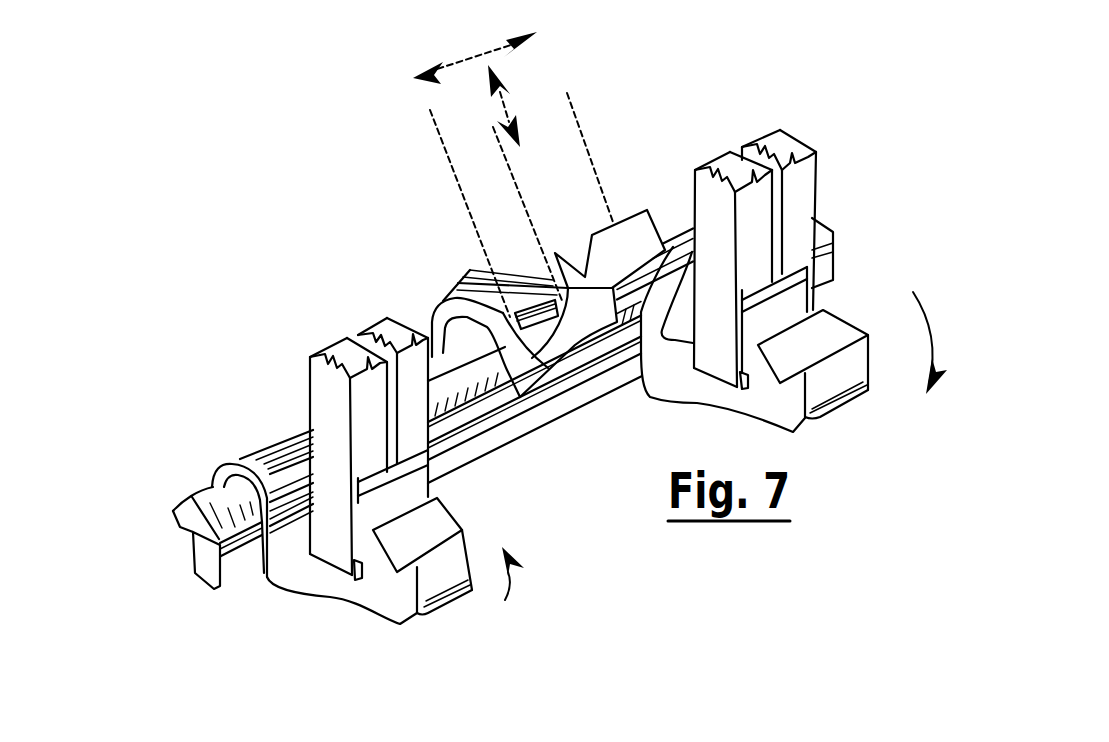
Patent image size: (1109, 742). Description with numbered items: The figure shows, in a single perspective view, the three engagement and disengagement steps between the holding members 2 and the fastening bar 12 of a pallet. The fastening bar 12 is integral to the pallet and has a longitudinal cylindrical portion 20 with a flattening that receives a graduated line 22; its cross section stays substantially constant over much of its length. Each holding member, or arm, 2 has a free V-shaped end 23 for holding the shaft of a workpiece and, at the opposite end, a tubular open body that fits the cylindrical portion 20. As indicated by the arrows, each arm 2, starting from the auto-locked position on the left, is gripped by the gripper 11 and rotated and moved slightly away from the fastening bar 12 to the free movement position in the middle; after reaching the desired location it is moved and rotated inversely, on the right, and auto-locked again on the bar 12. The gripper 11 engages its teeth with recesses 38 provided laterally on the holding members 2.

The holding member 2 is at (250, 450).
The gripper 11 is at (328, 393).
The fastening bar 12 is at (180, 507).
The longitudinal cylindrical portion 20 is at (172, 517).
The graduated line 22 is at (207, 492).
The free V-shaped end 23 is at (400, 607).
The recess 38 is at (360, 582).